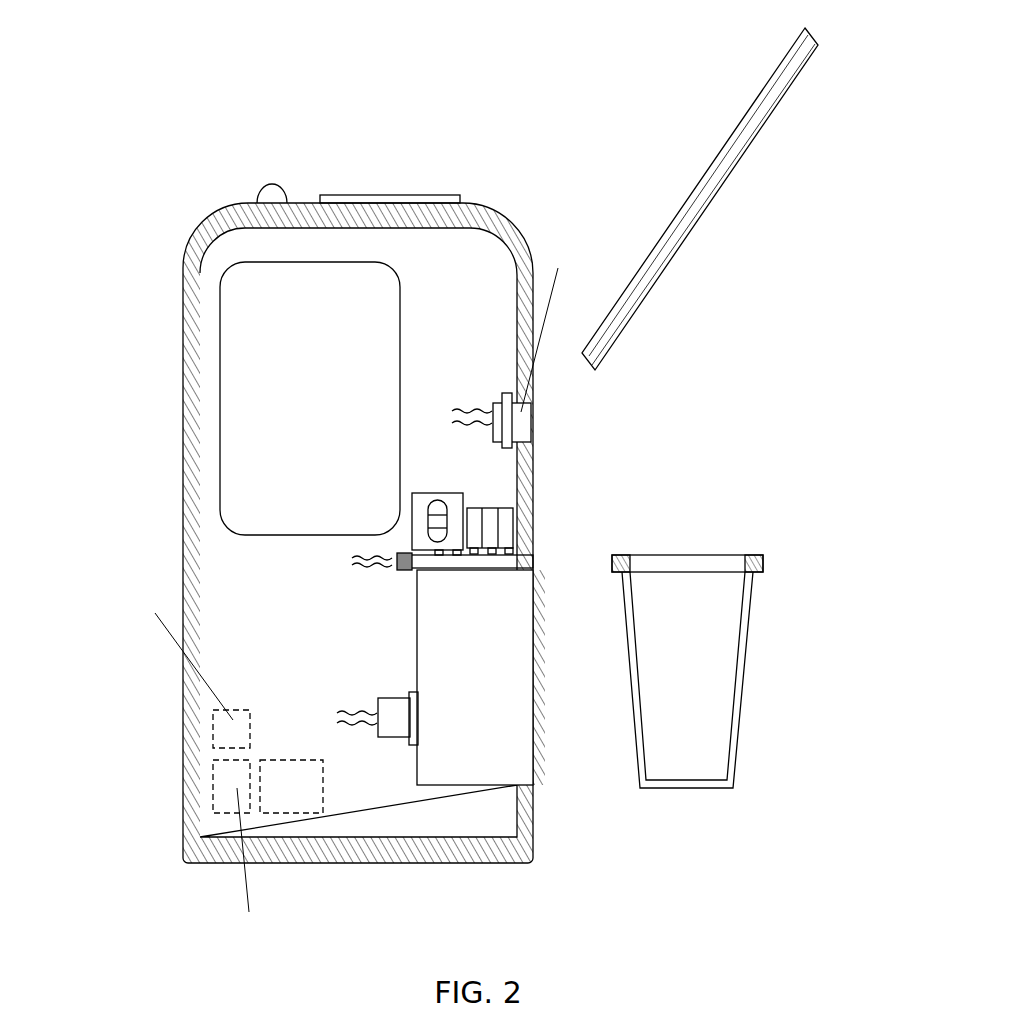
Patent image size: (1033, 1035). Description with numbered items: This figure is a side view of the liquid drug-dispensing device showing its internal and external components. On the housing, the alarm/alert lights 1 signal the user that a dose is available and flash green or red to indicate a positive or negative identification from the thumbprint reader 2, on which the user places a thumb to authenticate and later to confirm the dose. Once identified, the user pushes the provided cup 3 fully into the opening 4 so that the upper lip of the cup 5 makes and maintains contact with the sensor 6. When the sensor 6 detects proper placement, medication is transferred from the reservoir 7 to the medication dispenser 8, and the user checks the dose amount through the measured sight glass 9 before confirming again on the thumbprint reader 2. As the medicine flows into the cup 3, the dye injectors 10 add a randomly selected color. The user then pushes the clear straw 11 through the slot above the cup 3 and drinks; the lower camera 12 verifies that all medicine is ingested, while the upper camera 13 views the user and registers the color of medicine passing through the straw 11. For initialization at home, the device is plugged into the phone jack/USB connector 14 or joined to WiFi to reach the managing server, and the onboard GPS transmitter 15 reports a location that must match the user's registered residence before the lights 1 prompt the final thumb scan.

The alarm/alert lights 1 is at (265, 180).
The thumbprint reader 2 is at (425, 193).
The cup 3 is at (735, 675).
The opening 4 is at (520, 760).
The upper lip of the cup 5 is at (630, 563).
The sensor 6 is at (399, 573).
The reservoir 7 is at (228, 465).
The medication dispenser 8 is at (440, 492).
The sight glass 9 is at (428, 528).
The dye injectors 10 is at (513, 522).
The straw 11 is at (692, 217).
The lower camera 12 is at (397, 730).
The upper camera 13 is at (533, 420).
The phone jack/USB connector 14 is at (222, 803).
The GPS transmitter 15 is at (227, 737).